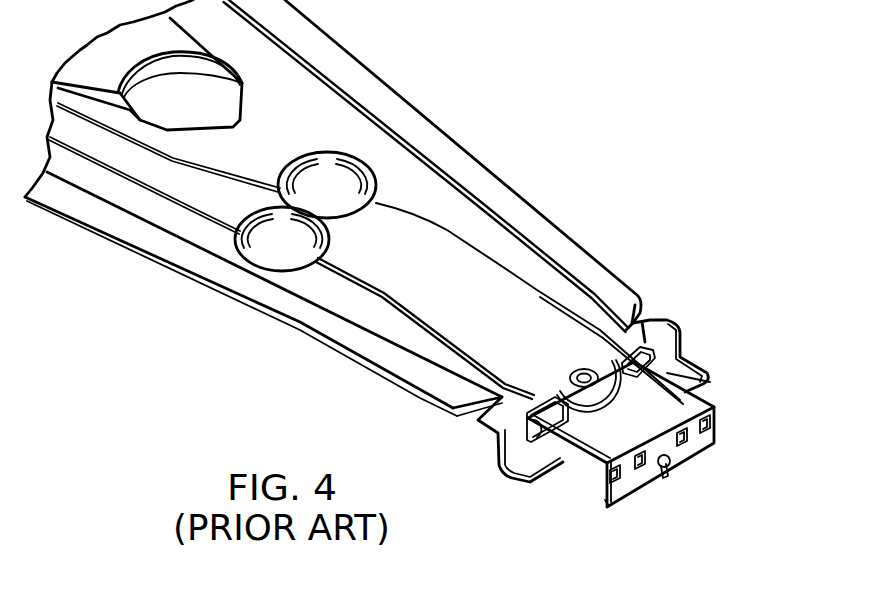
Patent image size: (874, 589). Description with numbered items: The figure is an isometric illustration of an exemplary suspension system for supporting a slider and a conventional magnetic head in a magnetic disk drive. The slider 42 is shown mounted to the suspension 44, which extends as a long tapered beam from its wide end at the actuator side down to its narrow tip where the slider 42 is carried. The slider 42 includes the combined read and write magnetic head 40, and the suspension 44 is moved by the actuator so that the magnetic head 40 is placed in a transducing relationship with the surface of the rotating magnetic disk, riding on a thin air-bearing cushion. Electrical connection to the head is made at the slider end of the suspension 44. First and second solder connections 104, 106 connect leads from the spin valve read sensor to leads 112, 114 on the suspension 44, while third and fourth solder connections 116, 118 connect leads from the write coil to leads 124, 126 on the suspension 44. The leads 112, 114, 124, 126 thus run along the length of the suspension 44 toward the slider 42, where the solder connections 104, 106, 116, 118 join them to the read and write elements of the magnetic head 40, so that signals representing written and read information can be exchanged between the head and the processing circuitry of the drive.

The suspension 44 is at (486, 161).
The slider 42 is at (546, 491).
The magnetic head 40 is at (673, 482).
The first solder connection 104 is at (605, 495).
The second solder connection 106 is at (703, 420).
The lead 112 is at (375, 290).
The lead 114 is at (540, 283).
The third solder connection 116 is at (637, 457).
The fourth solder connection 118 is at (690, 438).
The lead 124 is at (383, 296).
The lead 126 is at (458, 242).